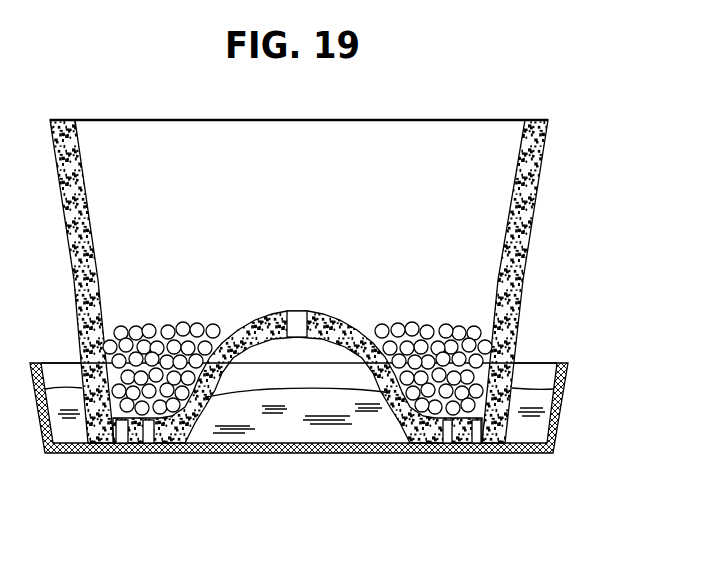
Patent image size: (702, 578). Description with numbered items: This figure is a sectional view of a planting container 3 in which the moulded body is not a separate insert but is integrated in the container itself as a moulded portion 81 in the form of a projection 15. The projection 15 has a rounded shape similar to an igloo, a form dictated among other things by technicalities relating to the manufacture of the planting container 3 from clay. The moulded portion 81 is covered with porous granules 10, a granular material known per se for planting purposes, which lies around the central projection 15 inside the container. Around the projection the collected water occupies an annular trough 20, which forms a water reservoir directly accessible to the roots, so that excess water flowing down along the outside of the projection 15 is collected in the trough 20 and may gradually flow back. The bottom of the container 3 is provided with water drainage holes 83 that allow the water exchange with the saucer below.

The planting container 3 is at (545, 140).
The moulded portion 81 is at (325, 311).
The projection 15 is at (393, 348).
The porous granules 10 is at (447, 363).
The annular trough 20 is at (568, 362).
The water drainage holes 83 is at (458, 452).